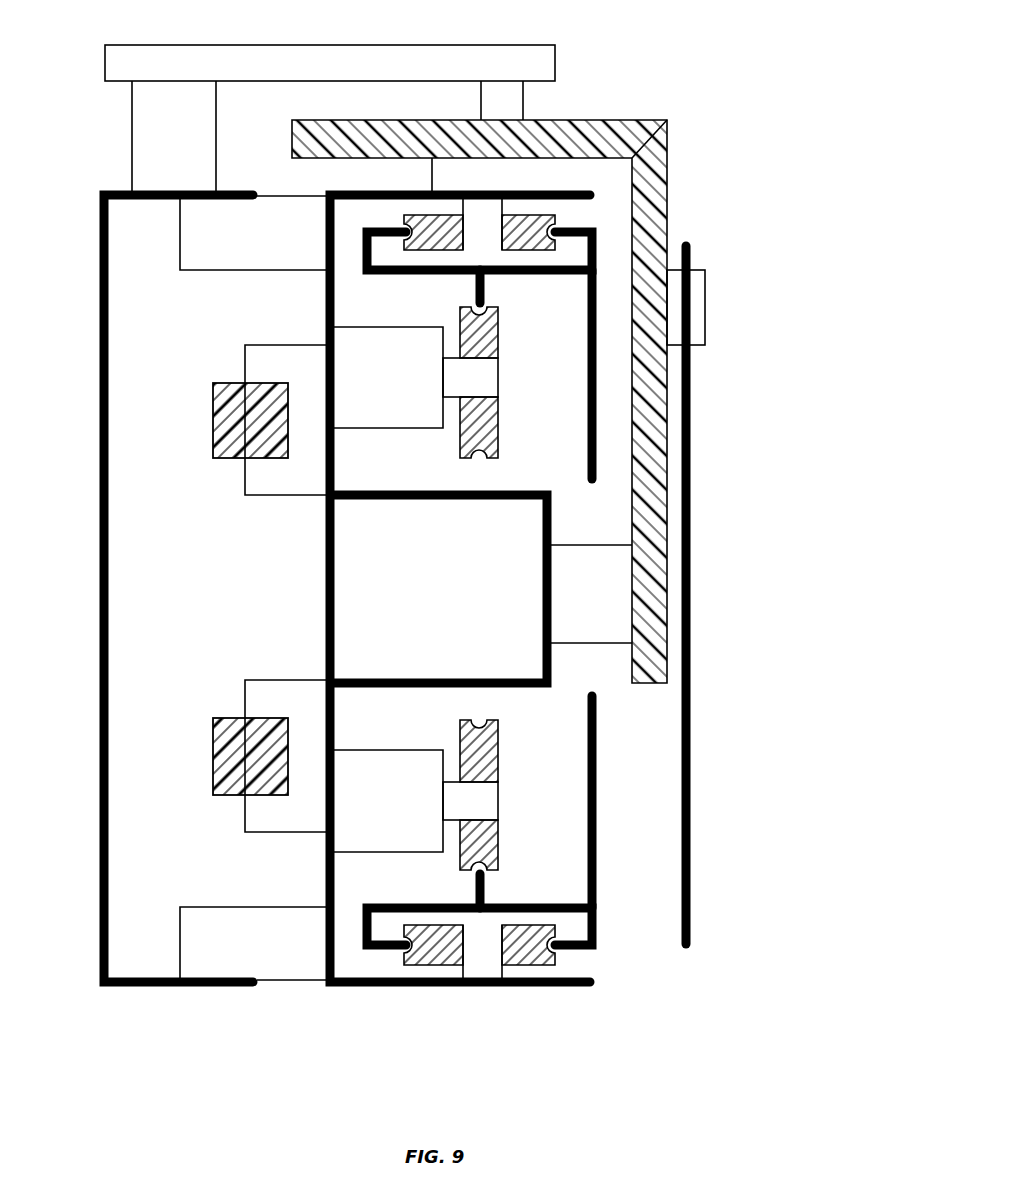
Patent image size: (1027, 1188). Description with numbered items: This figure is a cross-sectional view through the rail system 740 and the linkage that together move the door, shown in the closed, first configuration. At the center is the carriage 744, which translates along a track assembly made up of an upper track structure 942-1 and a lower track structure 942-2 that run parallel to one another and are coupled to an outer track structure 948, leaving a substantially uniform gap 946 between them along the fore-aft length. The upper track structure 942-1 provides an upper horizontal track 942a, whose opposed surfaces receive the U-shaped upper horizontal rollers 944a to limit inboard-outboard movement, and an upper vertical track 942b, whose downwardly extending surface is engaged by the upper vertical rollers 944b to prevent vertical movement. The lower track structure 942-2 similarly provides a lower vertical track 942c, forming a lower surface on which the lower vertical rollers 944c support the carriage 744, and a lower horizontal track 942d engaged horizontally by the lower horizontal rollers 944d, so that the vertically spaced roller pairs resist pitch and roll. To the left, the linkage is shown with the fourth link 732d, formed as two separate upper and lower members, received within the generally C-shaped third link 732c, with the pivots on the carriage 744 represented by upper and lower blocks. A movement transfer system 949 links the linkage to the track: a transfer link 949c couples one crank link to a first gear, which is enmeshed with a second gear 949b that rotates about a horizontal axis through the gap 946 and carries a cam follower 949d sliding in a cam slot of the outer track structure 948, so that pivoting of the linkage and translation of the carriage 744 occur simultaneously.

The rail system 740 is at (778, 150).
The carriage 744 is at (378, 676).
The third link 732c is at (109, 583).
The fourth link 732d is at (213, 412).
The upper track structure 942-1 is at (596, 392).
The lower track structure 942-2 is at (596, 795).
The upper horizontal track 942a is at (570, 230).
The upper vertical track 942b is at (487, 277).
The lower vertical track 942c is at (512, 910).
The lower horizontal track 942d is at (568, 950).
The upper horizontal rollers 944a is at (530, 218).
The upper vertical rollers 944b is at (488, 398).
The lower vertical rollers 944c is at (488, 774).
The lower horizontal rollers 944d is at (530, 960).
The uniform gap 946 is at (612, 519).
The outer track structure 948 is at (690, 560).
The movement transfer system 949 is at (745, 73).
The second gear 949b is at (668, 440).
The transfer link 949c is at (555, 58).
The cam follower 949d is at (705, 307).